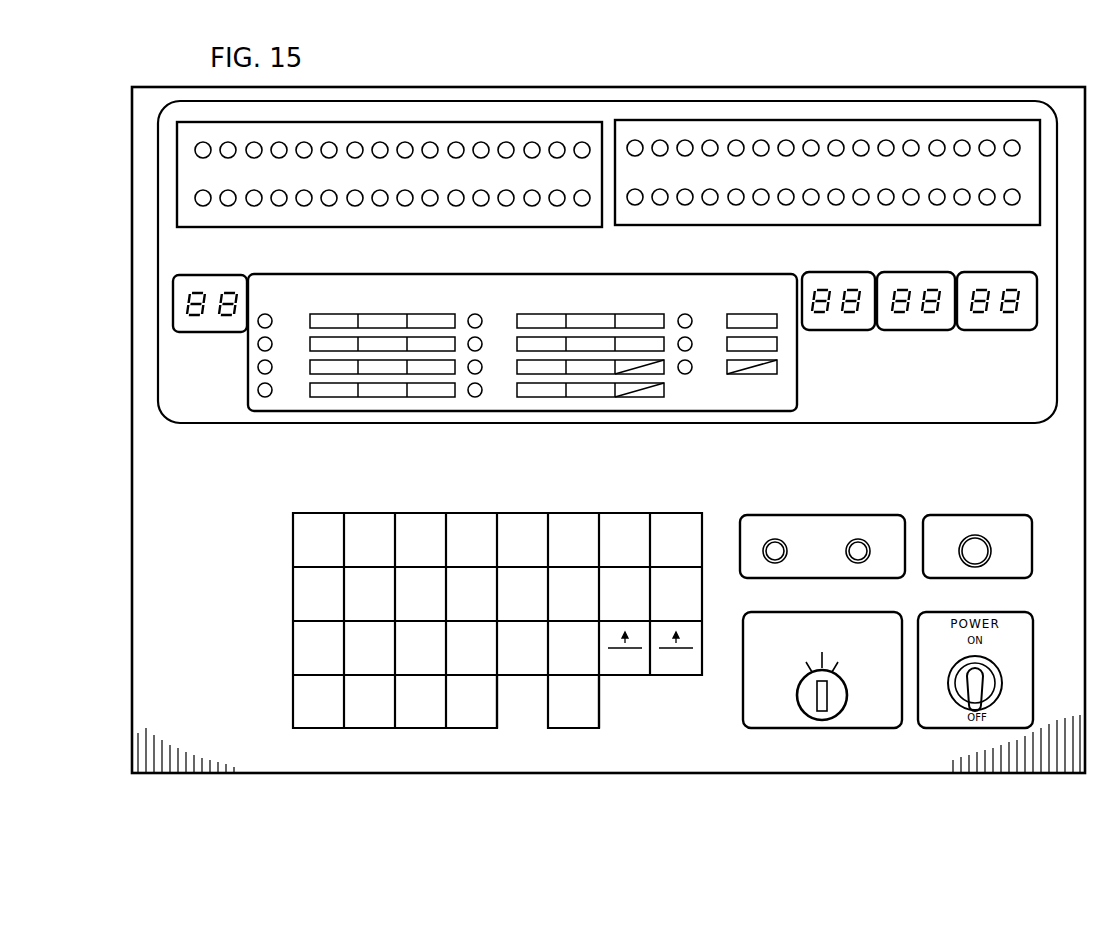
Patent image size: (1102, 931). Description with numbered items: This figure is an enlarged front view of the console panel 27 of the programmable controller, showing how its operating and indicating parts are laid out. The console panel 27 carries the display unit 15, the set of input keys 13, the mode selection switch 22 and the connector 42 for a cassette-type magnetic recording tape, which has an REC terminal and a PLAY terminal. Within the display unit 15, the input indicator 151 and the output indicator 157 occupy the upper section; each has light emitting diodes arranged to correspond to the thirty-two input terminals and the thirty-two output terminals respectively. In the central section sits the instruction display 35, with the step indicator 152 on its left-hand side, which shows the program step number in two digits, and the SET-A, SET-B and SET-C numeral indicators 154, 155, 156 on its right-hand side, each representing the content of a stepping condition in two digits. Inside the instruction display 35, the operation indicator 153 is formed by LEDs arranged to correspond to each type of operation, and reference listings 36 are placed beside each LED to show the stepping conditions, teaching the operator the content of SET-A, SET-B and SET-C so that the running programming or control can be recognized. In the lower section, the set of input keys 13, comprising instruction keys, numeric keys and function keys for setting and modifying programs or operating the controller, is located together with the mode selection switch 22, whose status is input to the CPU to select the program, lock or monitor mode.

The display unit 15 is at (158, 253).
The console panel 27 is at (133, 675).
The input indicator 151 is at (476, 128).
The output indicator 157 is at (878, 132).
The step indicator 152 is at (190, 331).
The instruction display 35 is at (481, 366).
The operation indicator 153 is at (266, 404).
The reference listings 36 is at (384, 400).
The SET-A numeral indicator 154 is at (840, 331).
The SET-B numeral indicator 155 is at (925, 331).
The SET-C numeral indicator 156 is at (1006, 331).
The set of input keys 13 is at (518, 712).
The connector 42 is at (818, 524).
The mode selection switch 22 is at (850, 718).